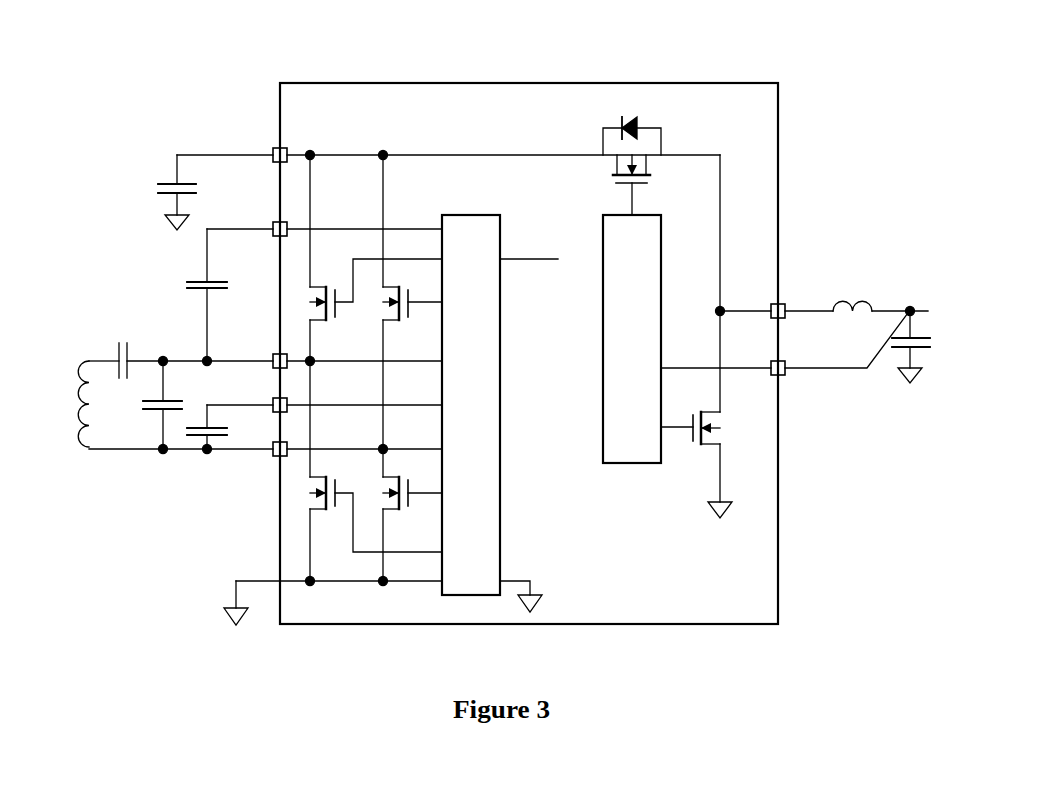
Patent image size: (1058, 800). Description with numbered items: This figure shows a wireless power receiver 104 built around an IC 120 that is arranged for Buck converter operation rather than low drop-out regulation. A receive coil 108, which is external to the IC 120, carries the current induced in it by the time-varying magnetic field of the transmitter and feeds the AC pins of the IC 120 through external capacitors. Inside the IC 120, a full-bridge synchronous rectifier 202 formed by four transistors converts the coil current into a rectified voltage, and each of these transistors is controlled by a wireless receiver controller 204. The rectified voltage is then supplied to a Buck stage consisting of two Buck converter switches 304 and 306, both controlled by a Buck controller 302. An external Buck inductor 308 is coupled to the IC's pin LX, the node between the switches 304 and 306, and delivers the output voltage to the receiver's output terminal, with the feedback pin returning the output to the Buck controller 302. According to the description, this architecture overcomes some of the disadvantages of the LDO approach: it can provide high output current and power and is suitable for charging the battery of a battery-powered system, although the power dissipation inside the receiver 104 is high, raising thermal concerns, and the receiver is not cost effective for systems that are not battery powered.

The receiving device 104 is at (302, 20).
The IC (integrated circuit) 120 is at (412, 83).
The receive coil 108 is at (73, 387).
The full-bridge synch rectifier 202 is at (372, 394).
The wireless receiver controller 204 is at (496, 457).
The Buck controller 302 is at (629, 448).
The Buck converter switch 304 is at (611, 140).
The Buck converter switch 306 is at (713, 427).
The external Buck inductor 308 is at (855, 292).